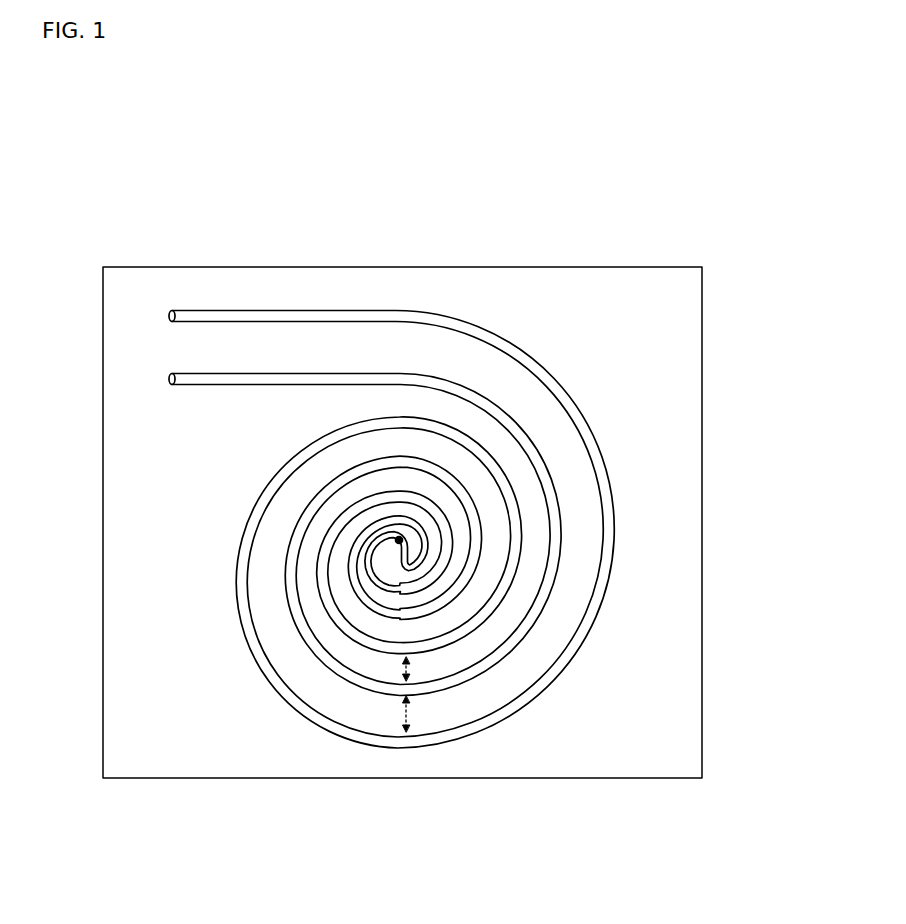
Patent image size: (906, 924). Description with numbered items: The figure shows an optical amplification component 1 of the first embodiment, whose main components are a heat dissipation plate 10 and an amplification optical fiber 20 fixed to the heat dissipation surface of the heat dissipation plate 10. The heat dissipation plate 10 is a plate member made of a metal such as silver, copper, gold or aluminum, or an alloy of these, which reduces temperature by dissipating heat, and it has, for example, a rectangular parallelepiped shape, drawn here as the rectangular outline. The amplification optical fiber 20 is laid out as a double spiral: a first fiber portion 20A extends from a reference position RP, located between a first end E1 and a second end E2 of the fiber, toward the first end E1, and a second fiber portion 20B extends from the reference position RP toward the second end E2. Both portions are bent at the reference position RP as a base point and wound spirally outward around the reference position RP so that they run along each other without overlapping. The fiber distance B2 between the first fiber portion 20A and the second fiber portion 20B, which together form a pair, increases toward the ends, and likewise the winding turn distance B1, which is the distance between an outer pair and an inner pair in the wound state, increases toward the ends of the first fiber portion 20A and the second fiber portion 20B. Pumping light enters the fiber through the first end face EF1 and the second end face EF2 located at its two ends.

The optical amplification component 1 is at (726, 171).
The heat dissipation plate 10 is at (618, 267).
The amplification optical fiber 20 is at (540, 365).
The first fiber portion 20A is at (608, 519).
The second fiber portion 20B is at (557, 566).
The first end E1 is at (173, 306).
The second end E2 is at (172, 390).
The first end face EF1 is at (169, 314).
The second end face EF2 is at (169, 381).
The reference position RP is at (395, 539).
The winding turn distance B1 is at (411, 668).
The fiber distance B2 is at (411, 710).